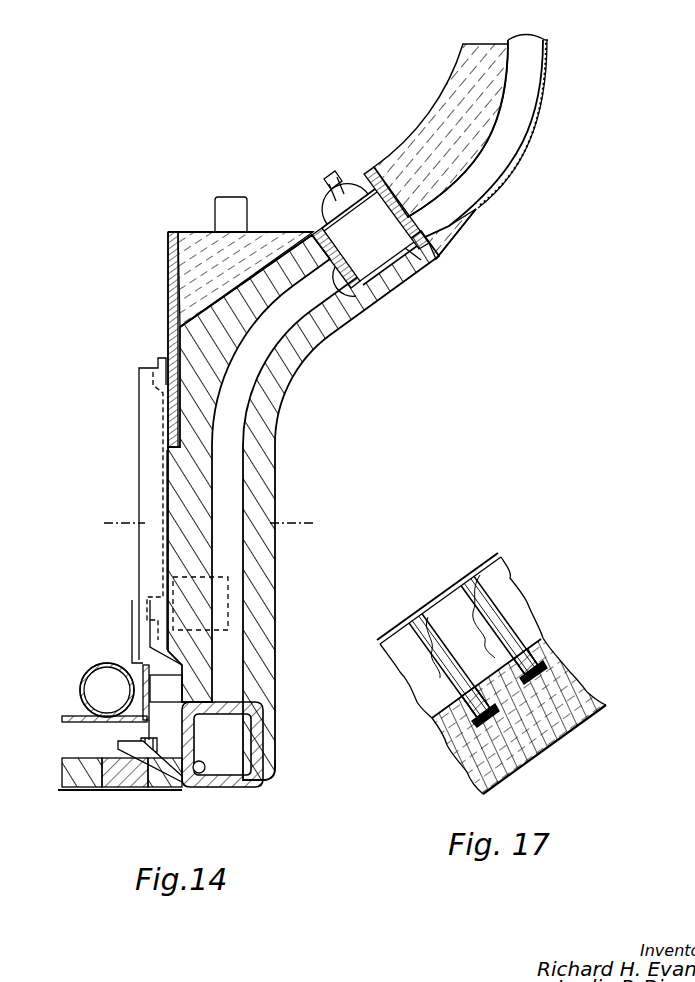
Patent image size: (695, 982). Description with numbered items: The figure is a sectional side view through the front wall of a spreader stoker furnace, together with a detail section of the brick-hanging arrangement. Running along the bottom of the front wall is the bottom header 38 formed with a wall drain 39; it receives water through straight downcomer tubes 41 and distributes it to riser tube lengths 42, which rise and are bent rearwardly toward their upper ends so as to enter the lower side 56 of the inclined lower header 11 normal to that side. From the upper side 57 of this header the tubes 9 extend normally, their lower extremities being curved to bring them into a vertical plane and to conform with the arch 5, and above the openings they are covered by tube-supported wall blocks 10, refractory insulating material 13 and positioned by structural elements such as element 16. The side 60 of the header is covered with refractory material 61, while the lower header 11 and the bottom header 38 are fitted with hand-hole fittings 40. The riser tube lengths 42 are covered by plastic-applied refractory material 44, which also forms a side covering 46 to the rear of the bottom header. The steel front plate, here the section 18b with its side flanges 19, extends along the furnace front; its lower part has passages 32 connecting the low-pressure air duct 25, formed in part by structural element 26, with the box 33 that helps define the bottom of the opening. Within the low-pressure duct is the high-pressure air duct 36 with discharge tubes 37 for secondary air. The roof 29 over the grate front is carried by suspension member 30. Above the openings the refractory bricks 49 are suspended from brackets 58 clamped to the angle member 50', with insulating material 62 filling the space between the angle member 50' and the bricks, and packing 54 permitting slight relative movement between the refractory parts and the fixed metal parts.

In FIG. 14, the arch 5 is at (433, 257).
In FIG. 14, the tubes 9 is at (530, 73).
In FIG. 14, the wall blocks 10 is at (527, 140).
In FIG. 14, the lower header 11 is at (417, 260).
In FIG. 14, the refractory insulating material 13 is at (468, 68).
In FIG. 14, the structural element 16 is at (114, 520).
In FIG. 14, the plate section 18b is at (162, 362).
In FIG. 14, the side flanges 19 is at (152, 416).
In FIG. 14, the low-pressure air duct 25 is at (85, 672).
In FIG. 14, the structural element 26 is at (65, 720).
In FIG. 14, the roof 29 is at (82, 775).
In FIG. 14, the suspension member 30 is at (133, 753).
In FIG. 14, the passages 32 is at (147, 630).
In FIG. 14, the box 33 is at (215, 617).
In FIG. 14, the high-pressure air duct 36 is at (102, 690).
In FIG. 14, the discharge tubes 37 is at (147, 667).
In FIG. 14, the bottom header 38 is at (237, 739).
In FIG. 14, the wall drain 39 is at (200, 774).
In FIG. 14, the hand-hole fittings 40 is at (333, 179).
In FIG. 14, the downcomer tubes 41 is at (233, 214).
In FIG. 14, the riser tube lengths 42 is at (235, 430).
In FIG. 14, the refractory material 44 is at (268, 475).
In FIG. 14, the side covering 46 is at (264, 769).
In FIG. 17, the refractory bricks 49 is at (568, 708).
In FIG. 14, the angle member 50' is at (222, 339).
In FIG. 17, the angle member 50' is at (491, 673).
In FIG. 14, the packing 54 is at (167, 565).
In FIG. 14, the lower side 56 is at (345, 292).
In FIG. 14, the upper side 57 is at (393, 180).
In FIG. 17, the brackets 58 is at (497, 618).
In FIG. 14, the side 60 is at (390, 283).
In FIG. 14, the refractory material 61 is at (368, 290).
In FIG. 14, the insulating material 62 is at (277, 248).